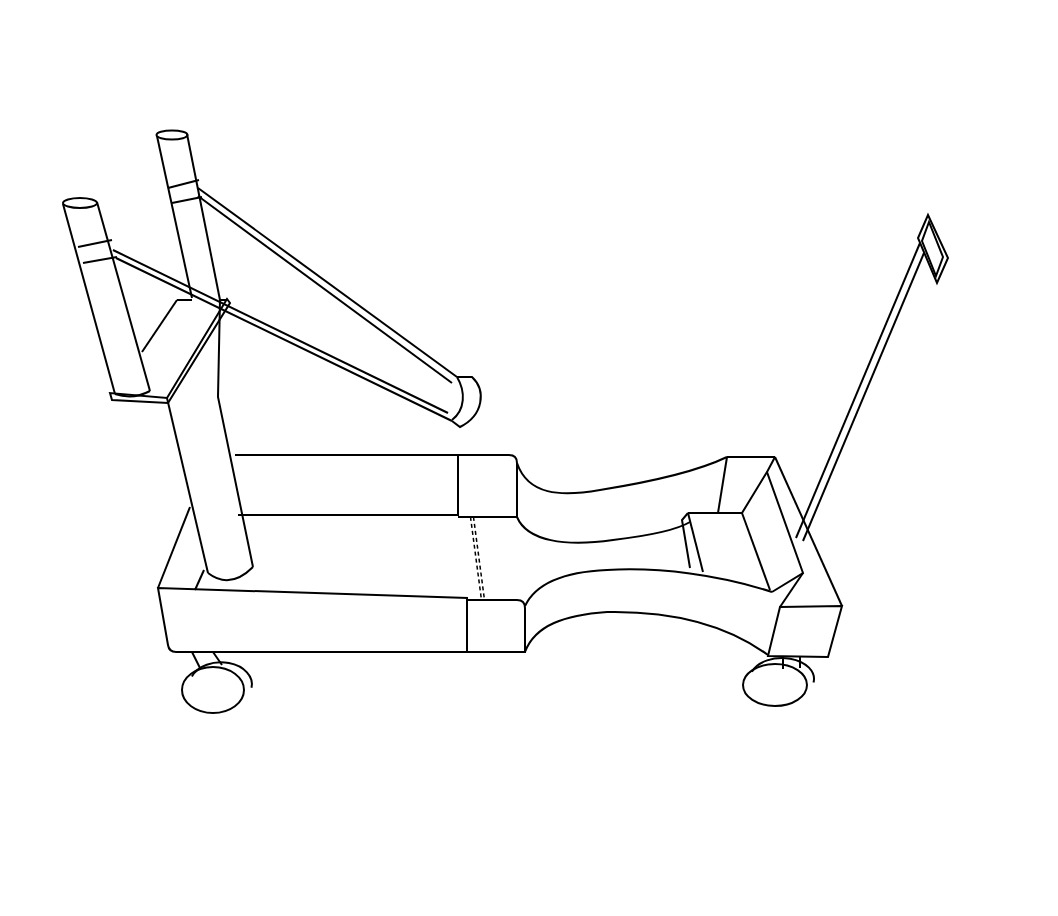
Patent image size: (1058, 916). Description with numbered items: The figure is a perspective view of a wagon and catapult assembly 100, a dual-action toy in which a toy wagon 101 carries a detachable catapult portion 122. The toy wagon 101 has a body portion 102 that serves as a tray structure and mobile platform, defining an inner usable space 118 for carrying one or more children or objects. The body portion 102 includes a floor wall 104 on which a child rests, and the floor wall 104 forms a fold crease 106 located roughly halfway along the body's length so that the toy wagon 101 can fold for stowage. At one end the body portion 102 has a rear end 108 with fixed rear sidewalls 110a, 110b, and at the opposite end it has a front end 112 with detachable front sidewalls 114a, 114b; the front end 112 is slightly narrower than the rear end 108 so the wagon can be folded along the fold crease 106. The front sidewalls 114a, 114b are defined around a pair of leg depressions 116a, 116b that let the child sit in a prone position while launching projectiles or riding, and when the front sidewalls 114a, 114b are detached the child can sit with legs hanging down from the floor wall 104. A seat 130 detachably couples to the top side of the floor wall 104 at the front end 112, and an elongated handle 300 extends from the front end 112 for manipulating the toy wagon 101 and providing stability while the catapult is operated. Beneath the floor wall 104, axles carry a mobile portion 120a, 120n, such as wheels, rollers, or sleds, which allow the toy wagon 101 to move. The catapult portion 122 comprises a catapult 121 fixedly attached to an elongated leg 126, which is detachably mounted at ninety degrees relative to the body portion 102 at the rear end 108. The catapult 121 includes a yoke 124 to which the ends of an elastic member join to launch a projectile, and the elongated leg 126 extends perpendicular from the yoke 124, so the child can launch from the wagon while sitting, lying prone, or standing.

The wagon and catapult assembly 100 is at (729, 134).
The toy wagon 101 is at (847, 674).
The body portion 102 is at (351, 446).
The floor wall 104 is at (397, 566).
The fold crease 106 is at (470, 560).
The rear end 108 is at (146, 597).
The rear sidewall 110a is at (397, 497).
The rear sidewall 110b is at (370, 638).
The front end 112 is at (834, 559).
The front sidewall 114a is at (540, 487).
The front sidewall 114b is at (493, 641).
The leg depression 116a is at (608, 490).
The leg depression 116b is at (645, 612).
The inner usable space 118 is at (291, 579).
The mobile portion 120a is at (212, 692).
The mobile portion 120n is at (787, 690).
The catapult 121 is at (91, 321).
The catapult portion 122 is at (107, 97).
The yoke 124 is at (193, 157).
The elongated leg 126 is at (217, 398).
The seat 130 is at (733, 533).
The elongated handle 300 is at (897, 340).